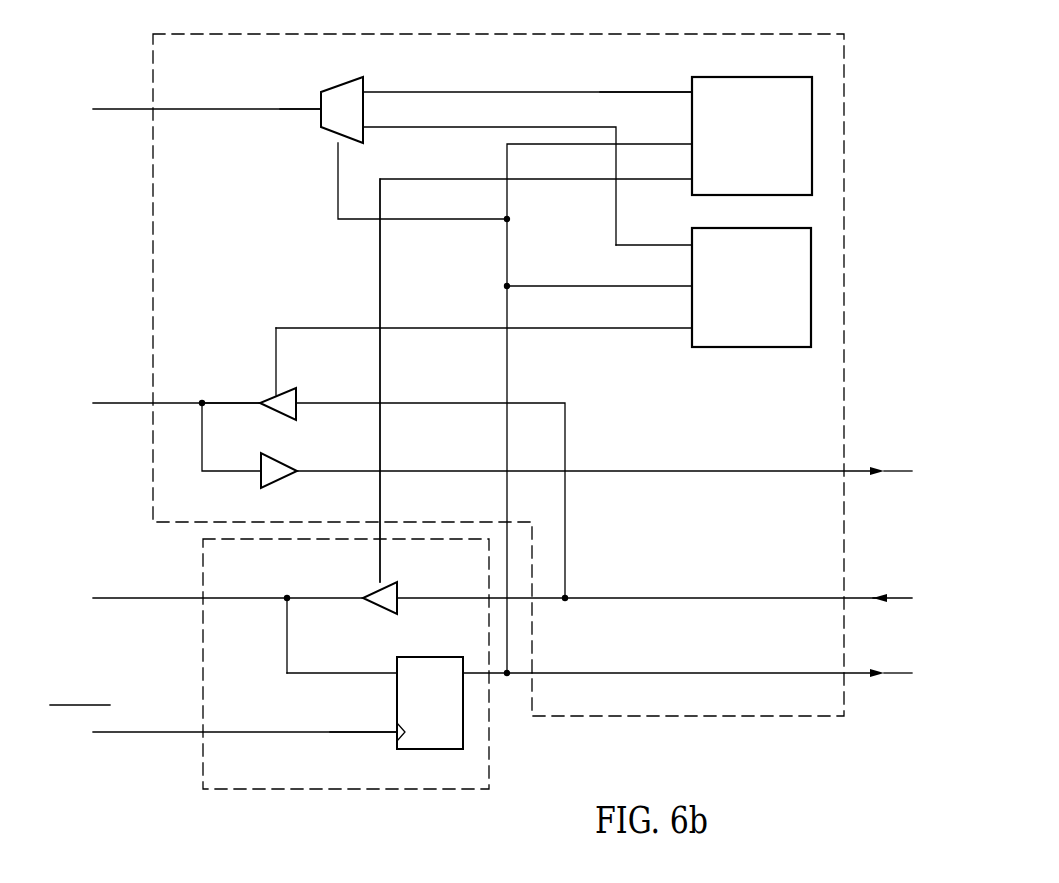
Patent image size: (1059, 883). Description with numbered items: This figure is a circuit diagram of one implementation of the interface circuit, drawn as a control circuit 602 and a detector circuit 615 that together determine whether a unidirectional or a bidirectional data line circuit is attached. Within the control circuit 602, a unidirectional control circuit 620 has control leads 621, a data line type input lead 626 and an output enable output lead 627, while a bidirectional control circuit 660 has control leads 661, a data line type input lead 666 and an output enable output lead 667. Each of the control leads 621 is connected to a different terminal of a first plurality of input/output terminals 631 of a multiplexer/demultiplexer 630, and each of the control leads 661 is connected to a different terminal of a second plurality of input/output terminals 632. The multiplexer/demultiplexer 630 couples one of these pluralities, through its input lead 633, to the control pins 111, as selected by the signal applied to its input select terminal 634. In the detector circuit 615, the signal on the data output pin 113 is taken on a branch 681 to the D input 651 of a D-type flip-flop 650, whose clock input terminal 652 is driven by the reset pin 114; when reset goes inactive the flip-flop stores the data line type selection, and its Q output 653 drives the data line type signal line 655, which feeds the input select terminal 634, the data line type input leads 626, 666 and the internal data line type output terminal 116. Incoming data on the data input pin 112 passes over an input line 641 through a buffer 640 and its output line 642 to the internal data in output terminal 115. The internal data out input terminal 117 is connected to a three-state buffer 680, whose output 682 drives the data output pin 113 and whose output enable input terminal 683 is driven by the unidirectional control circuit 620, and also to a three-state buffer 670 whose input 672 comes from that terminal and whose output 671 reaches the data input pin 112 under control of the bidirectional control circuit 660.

The control pins 111 is at (120, 111).
The data input pin 112 is at (117, 405).
The data output pin 113 is at (110, 600).
The reset pin 114 is at (116, 733).
The internal data in output terminal 115 is at (893, 470).
The internal data line type output terminal 116 is at (893, 675).
The internal data out input terminal 117 is at (893, 597).
The control circuit 602 is at (788, 709).
The detector circuit 615 is at (454, 785).
The unidirectional control circuit 620 is at (784, 76).
The control leads 621 is at (645, 91).
The data line type input lead 626 is at (653, 142).
The output enable output lead 627 is at (633, 178).
The multiplexer/demultiplexer 630 is at (352, 84).
The first plurality of input/output terminals 631 is at (395, 92).
The second plurality of input/output terminals 632 is at (388, 140).
The demultiplexer input 633 is at (297, 107).
The input select terminal 634 is at (337, 167).
The buffer 640 is at (285, 457).
The buffer 640 input 641 is at (235, 470).
The buffer 640 output 642 is at (333, 470).
The D-type flip-flop 650 is at (432, 655).
The flip-flop D input 651 is at (339, 672).
The clock input terminal 652 is at (359, 728).
The flip-flop Q output 653 is at (477, 668).
The data line type signal line 655 is at (613, 673).
The bidirectional control circuit 660 is at (785, 348).
The control leads 661 is at (652, 244).
The data line type input lead 666 is at (638, 286).
The output enable output lead 667 is at (642, 332).
The three-state buffer 670 is at (307, 387).
The buffer 670 input 671 is at (235, 402).
The buffer 670 output 672 is at (339, 402).
The three-state buffer 680 is at (380, 610).
The output terminal 681 is at (318, 600).
The buffer 680 output 682 is at (422, 595).
The output enable input terminal 683 is at (379, 556).